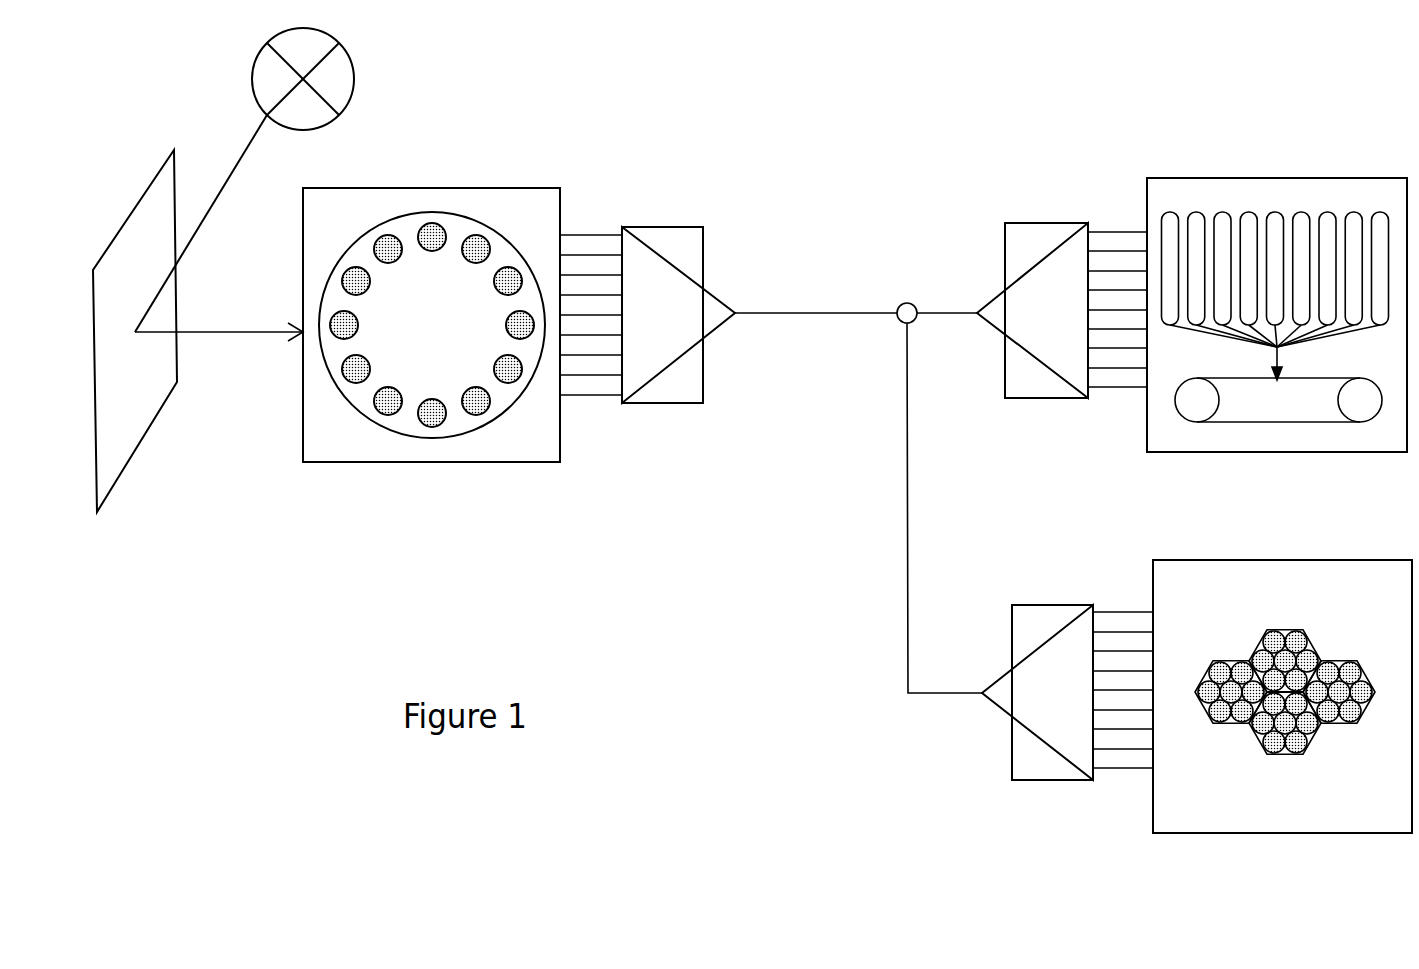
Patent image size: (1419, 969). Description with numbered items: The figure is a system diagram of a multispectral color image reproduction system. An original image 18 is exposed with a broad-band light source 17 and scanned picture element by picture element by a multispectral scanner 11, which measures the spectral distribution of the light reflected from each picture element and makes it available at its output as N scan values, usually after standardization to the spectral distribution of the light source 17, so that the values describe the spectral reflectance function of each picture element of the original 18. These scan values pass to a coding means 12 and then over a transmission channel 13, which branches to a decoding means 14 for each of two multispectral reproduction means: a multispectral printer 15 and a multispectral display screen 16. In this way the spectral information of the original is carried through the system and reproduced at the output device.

The multispectral scanner 11 is at (431, 349).
The coding means 12 is at (647, 339).
The transmission channel 13 is at (858, 498).
The decoding means 14 is at (1065, 526).
The multispectral printer 15 is at (1277, 335).
The multispectral display screen 16 is at (1282, 716).
The broad-band light source 17 is at (268, 180).
The original image 18 is at (198, 331).